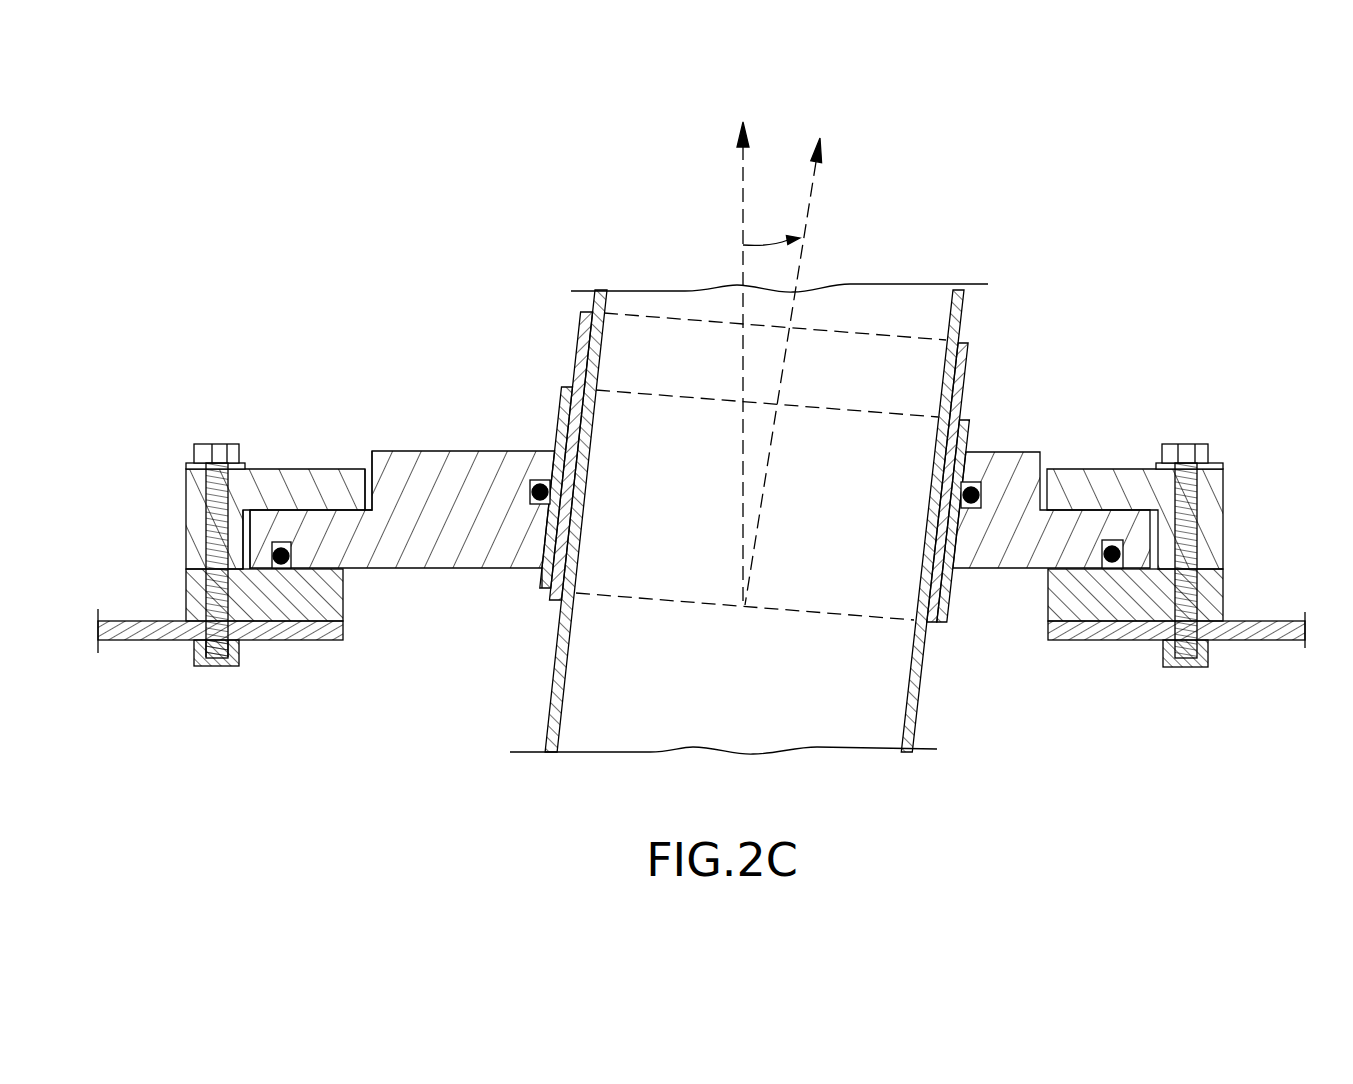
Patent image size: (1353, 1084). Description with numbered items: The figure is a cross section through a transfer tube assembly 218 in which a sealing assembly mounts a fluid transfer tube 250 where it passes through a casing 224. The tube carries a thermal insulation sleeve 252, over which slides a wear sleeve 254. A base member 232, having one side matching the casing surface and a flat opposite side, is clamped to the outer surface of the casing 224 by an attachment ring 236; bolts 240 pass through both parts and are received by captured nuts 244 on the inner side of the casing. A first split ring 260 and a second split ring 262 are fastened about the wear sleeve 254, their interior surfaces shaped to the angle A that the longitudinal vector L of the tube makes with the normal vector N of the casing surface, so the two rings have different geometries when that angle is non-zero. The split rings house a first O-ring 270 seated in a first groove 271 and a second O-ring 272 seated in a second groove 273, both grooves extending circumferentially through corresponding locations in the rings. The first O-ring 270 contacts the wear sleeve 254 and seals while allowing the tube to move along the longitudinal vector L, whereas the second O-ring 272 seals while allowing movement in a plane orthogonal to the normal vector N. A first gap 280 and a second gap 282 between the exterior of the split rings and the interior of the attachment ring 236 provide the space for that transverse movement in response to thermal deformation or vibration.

The joint assembly 218 is at (338, 275).
The casing 224 is at (157, 637).
The base member 232 is at (343, 615).
The attachment ring 236 is at (269, 476).
The bolts 240 is at (215, 456).
The captured nuts 244 is at (231, 665).
The fluid transfer tube 250 is at (968, 301).
The thermal insulation sleeve 252 is at (972, 381).
The wear sleeve 254 is at (973, 433).
The first split ring 260 is at (420, 450).
The second split ring 262 is at (1043, 463).
The first O-ring 270 is at (540, 481).
The first groove 271 is at (540, 506).
The second O-ring 272 is at (293, 563).
The second groove 273 is at (293, 551).
The first gap 280 is at (251, 530).
The second gap 282 is at (362, 492).
The normal vector N is at (742, 208).
The longitudinal vector L is at (812, 192).
The angle A is at (763, 240).